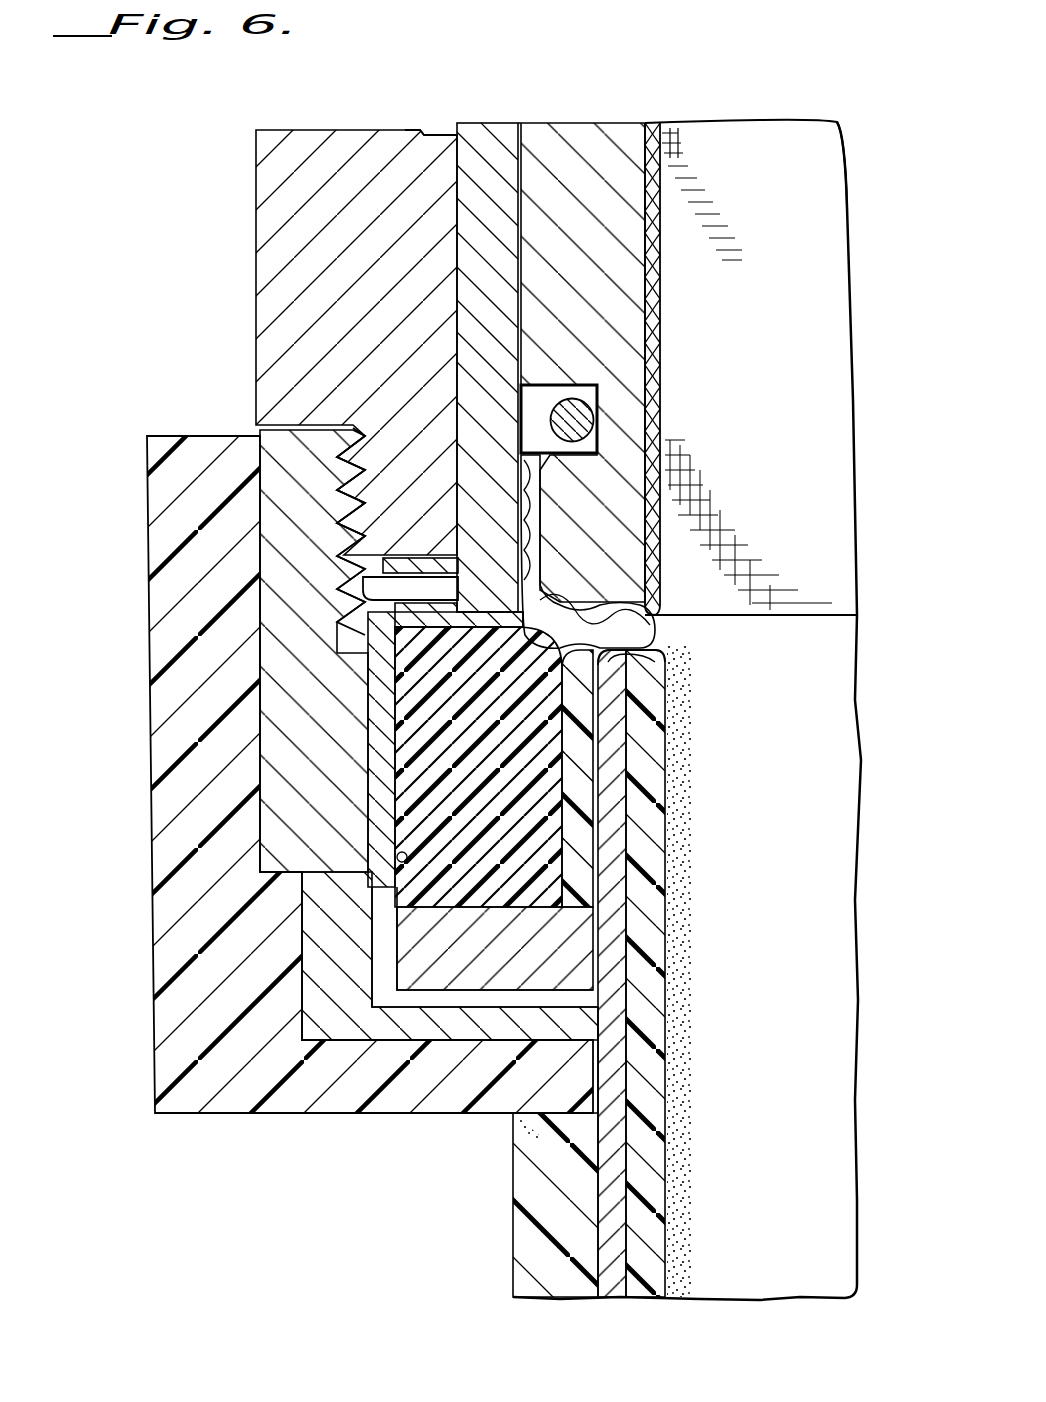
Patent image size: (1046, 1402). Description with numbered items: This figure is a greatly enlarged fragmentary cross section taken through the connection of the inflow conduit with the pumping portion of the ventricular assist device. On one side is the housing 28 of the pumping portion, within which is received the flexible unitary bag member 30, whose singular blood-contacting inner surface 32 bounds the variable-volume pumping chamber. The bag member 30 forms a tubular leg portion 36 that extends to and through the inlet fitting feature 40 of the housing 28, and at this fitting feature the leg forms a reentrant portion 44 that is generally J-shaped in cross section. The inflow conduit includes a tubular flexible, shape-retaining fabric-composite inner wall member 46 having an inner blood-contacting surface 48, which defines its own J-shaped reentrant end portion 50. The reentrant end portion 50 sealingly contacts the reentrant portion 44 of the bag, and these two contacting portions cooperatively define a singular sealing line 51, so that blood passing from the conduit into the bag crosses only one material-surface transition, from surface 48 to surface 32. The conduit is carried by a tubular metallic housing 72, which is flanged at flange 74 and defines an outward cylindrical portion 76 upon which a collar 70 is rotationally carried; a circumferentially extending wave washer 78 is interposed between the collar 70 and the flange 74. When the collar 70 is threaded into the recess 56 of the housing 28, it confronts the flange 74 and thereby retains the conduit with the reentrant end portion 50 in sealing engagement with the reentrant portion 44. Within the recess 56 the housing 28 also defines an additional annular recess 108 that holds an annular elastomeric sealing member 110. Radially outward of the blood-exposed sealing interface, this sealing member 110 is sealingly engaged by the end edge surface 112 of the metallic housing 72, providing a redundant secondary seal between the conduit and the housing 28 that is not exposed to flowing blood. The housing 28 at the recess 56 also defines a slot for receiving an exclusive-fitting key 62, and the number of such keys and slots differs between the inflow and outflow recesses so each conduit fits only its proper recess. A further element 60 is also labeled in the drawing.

The housing 28 is at (160, 778).
The bag member 30 is at (690, 980).
The inner surface 32 is at (714, 1057).
The tubular leg portion 36 is at (800, 1205).
The inlet fitting feature 40 is at (176, 258).
The reentrant portion 44 is at (523, 578).
The inner wall member 46 is at (662, 420).
The inner blood-contacting surface 48 is at (704, 316).
The reentrant end portion 50 is at (664, 648).
The sealing line 51 is at (797, 620).
The recess 56 is at (372, 505).
The spacer ring 60 is at (380, 948).
The exclusive-fitting key 62 is at (372, 778).
The collar 70 is at (262, 193).
The tubular metallic housing 72 is at (496, 128).
The flange 74 is at (365, 618).
The outward cylindrical portion 76 is at (440, 130).
The wave washer 78 is at (363, 580).
The annular recess 108 is at (395, 857).
The sealing member 110 is at (408, 717).
The end edge surface 112 is at (437, 632).